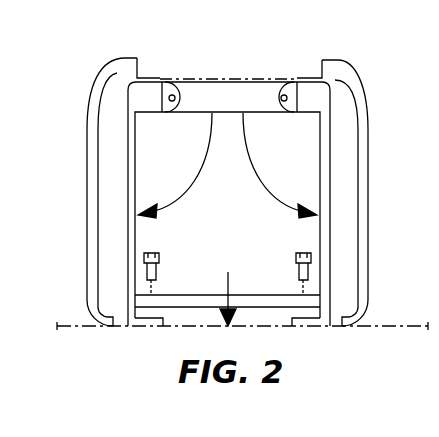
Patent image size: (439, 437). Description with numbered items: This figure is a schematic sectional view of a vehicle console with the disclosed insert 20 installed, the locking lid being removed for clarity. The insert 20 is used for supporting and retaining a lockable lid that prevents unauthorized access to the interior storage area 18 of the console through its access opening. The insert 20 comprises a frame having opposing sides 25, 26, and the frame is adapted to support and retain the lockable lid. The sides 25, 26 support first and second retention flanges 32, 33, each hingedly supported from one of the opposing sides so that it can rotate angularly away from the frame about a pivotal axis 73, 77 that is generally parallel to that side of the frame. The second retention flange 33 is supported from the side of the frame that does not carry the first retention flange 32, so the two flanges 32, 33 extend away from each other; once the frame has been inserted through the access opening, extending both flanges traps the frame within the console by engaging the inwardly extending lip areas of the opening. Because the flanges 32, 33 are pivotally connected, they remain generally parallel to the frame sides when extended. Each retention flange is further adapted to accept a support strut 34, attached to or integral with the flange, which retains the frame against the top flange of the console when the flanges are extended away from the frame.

The interior storage area 18 is at (240, 226).
The insert 20 is at (216, 100).
The opposing side of frame 25 is at (266, 115).
The opposing side of frame 26 is at (188, 115).
The first retention flange 32 is at (329, 178).
The second retention flange 33 is at (128, 172).
The support strut 34 is at (187, 295).
The pivotal axis 73 is at (282, 93).
The pivotal axis 77 is at (171, 93).